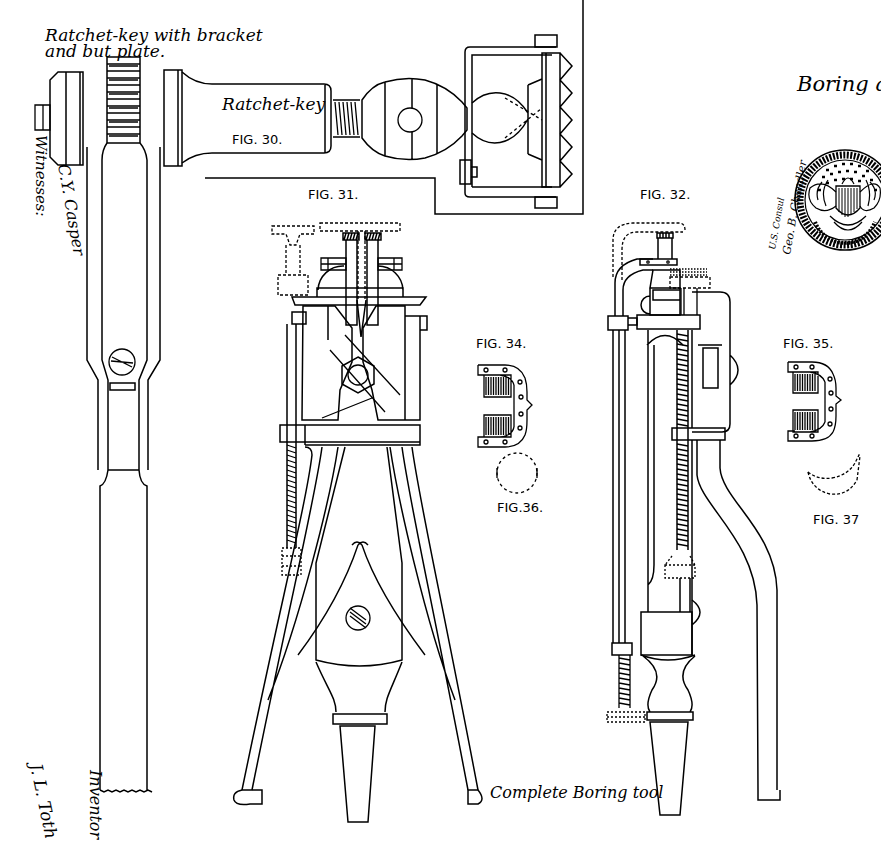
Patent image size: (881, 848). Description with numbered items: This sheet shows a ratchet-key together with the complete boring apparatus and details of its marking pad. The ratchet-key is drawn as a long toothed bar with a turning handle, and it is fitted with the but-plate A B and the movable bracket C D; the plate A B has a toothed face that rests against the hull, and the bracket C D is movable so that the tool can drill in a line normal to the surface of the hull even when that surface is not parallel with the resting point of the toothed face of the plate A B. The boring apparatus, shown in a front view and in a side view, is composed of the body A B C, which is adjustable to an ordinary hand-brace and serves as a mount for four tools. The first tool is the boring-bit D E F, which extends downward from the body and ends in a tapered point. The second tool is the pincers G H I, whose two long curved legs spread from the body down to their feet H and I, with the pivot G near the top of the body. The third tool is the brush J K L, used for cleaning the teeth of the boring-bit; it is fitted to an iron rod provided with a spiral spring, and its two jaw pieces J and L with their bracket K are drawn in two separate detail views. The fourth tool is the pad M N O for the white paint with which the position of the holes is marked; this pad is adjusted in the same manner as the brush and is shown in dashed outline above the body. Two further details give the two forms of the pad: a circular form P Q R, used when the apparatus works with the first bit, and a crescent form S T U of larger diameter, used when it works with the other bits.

In FIG. 30, the but-plate A is at (553, 110).
In FIG. 31, the but-plate A is at (322, 363).
In FIG. 32, the but-plate A is at (626, 726).
In FIG. 30, the but-plate B is at (553, 203).
In FIG. 31, the but-plate B is at (395, 363).
In FIG. 30, the movable bracket C is at (466, 186).
In FIG. 31, the movable bracket C is at (359, 742).
In FIG. 30, the movable bracket D is at (507, 115).
In FIG. 31, the movable bracket D is at (374, 279).
In FIG. 32, the movable bracket D is at (660, 292).
In FIG. 32, the boring-bit E is at (692, 440).
In FIG. 32, the boring-bit F is at (670, 625).
In FIG. 31, the pincers G is at (361, 376).
In FIG. 32, the pincers G is at (718, 362).
In FIG. 31, the pincers H is at (256, 800).
In FIG. 32, the pincers H is at (756, 799).
In FIG. 31, the pincers I is at (465, 800).
In FIG. 32, the pincers I is at (779, 799).
In FIG. 31, the brush J is at (326, 267).
In FIG. 34, the brush J is at (493, 379).
In FIG. 35, the brush J is at (803, 374).
In FIG. 31, the brush K is at (355, 279).
In FIG. 32, the brush K is at (630, 288).
In FIG. 34, the brush K is at (530, 406).
In FIG. 35, the brush K is at (841, 403).
In FIG. 31, the brush L is at (395, 267).
In FIG. 32, the brush L is at (663, 251).
In FIG. 34, the brush L is at (494, 433).
In FIG. 35, the brush L is at (804, 428).
In FIG. 31, the pad M is at (280, 282).
In FIG. 32, the pad M is at (690, 283).
In FIG. 31, the pad N is at (301, 257).
In FIG. 32, the pad N is at (696, 273).
In FIG. 31, the pad O is at (286, 561).
In FIG. 32, the pad O is at (680, 563).
In FIG. 36, the circular pad P is at (490, 475).
In FIG. 36, the circular pad Q is at (517, 473).
In FIG. 36, the circular pad R is at (545, 475).
In FIG. 37, the crescent pad S is at (816, 466).
In FIG. 37, the crescent pad T is at (832, 490).
In FIG. 37, the crescent pad U is at (848, 463).